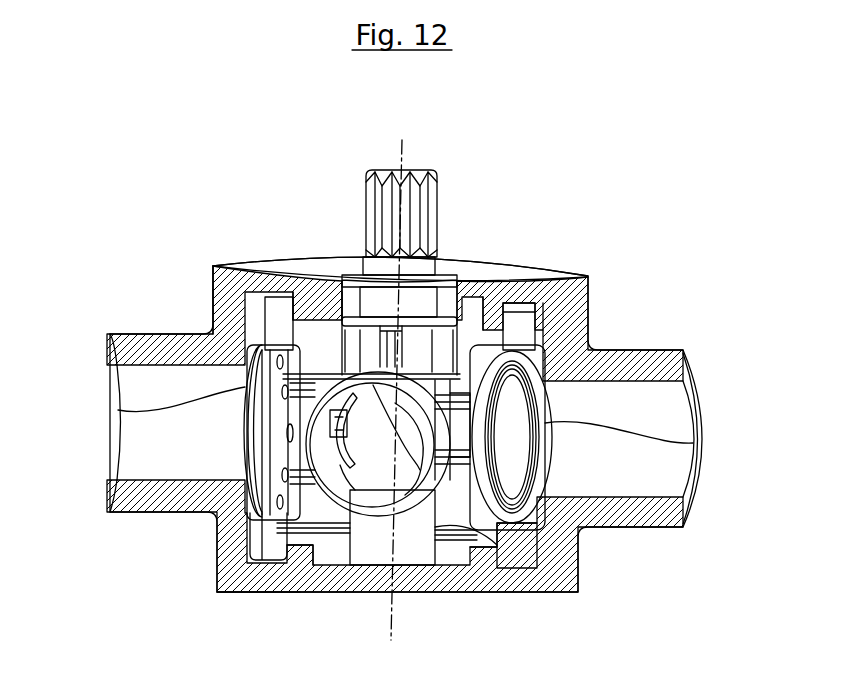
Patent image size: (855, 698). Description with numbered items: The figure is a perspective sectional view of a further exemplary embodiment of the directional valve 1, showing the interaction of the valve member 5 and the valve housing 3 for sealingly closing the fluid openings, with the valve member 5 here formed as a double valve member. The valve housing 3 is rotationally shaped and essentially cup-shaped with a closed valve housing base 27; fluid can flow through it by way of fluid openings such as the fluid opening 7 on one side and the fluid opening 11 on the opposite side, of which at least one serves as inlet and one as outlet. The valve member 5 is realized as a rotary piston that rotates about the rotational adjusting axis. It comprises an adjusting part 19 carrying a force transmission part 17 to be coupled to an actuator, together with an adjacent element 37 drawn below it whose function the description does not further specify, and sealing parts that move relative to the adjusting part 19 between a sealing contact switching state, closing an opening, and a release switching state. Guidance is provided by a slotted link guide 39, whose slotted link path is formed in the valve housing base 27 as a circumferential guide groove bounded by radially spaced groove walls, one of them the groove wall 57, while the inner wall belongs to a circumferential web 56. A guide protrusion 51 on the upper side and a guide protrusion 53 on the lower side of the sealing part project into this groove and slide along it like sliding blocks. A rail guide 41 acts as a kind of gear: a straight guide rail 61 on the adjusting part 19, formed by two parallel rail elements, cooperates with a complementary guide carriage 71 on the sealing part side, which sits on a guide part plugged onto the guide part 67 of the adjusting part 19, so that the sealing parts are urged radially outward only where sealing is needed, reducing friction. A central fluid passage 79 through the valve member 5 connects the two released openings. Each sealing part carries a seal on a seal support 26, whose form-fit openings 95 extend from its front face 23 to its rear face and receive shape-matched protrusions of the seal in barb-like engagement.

The directional valve 1 is at (509, 178).
The valve housing 3 is at (600, 318).
The valve member 5 is at (585, 320).
The fluid opening 7 is at (125, 381).
The fluid opening 11 is at (690, 403).
The force transmission part 17 is at (437, 213).
The adjusting part 19 is at (367, 553).
The front face 23 is at (242, 390).
The seal support 26 is at (243, 345).
The valve housing base 27 is at (300, 565).
The stem collar 37 is at (440, 305).
The slotted link guide 39 is at (248, 322).
The rail guide 41 is at (360, 450).
The guide protrusion 51 is at (293, 323).
The guide protrusion 53 is at (272, 538).
The circumferential web 56 is at (483, 557).
The groove wall 57 is at (252, 556).
The guide rail 61 is at (370, 388).
The guide part 67 is at (307, 345).
The guide carriage 71 is at (356, 396).
The fluid passage 79 is at (362, 485).
The form-fit opening 95 is at (280, 500).